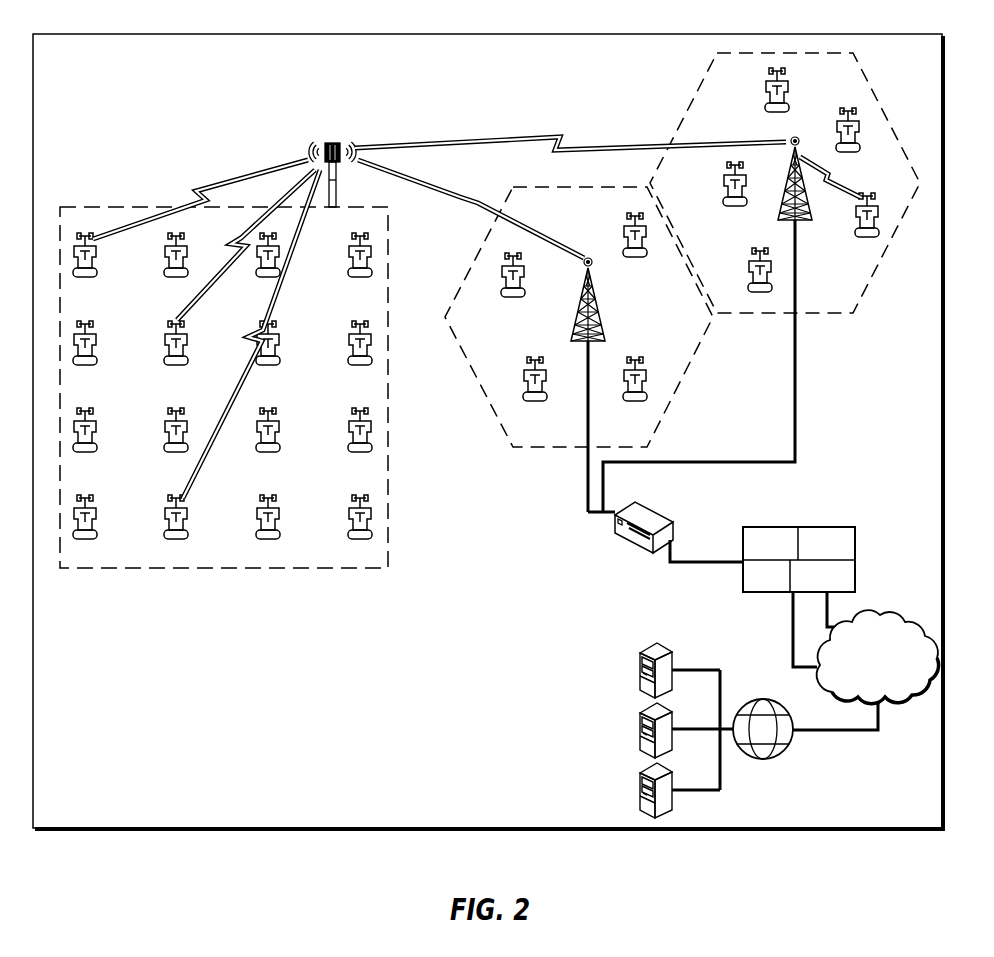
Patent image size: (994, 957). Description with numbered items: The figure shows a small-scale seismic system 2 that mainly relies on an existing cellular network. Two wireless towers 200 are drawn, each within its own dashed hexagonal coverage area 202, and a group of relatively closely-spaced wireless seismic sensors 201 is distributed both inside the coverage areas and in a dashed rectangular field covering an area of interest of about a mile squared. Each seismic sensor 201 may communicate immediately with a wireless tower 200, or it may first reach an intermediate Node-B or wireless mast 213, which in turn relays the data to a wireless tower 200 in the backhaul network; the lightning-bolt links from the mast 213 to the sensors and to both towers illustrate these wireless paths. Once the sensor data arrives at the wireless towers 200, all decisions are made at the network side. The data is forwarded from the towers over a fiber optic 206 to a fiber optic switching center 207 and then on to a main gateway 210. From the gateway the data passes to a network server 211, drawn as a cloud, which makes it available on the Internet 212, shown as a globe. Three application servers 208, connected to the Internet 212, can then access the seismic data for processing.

The seismic system 2 is at (83, 33).
The wireless tower 200 is at (602, 318).
The wireless seismic sensor 201 is at (174, 365).
The coverage area 202 is at (528, 448).
The fiber optic 206 is at (796, 388).
The fiber optic switching center 207 is at (650, 512).
The application server 208 is at (640, 672).
The main gateway 210 is at (775, 527).
The network server 211 is at (898, 671).
The Internet 212 is at (772, 758).
The wireless mast 213 is at (332, 143).